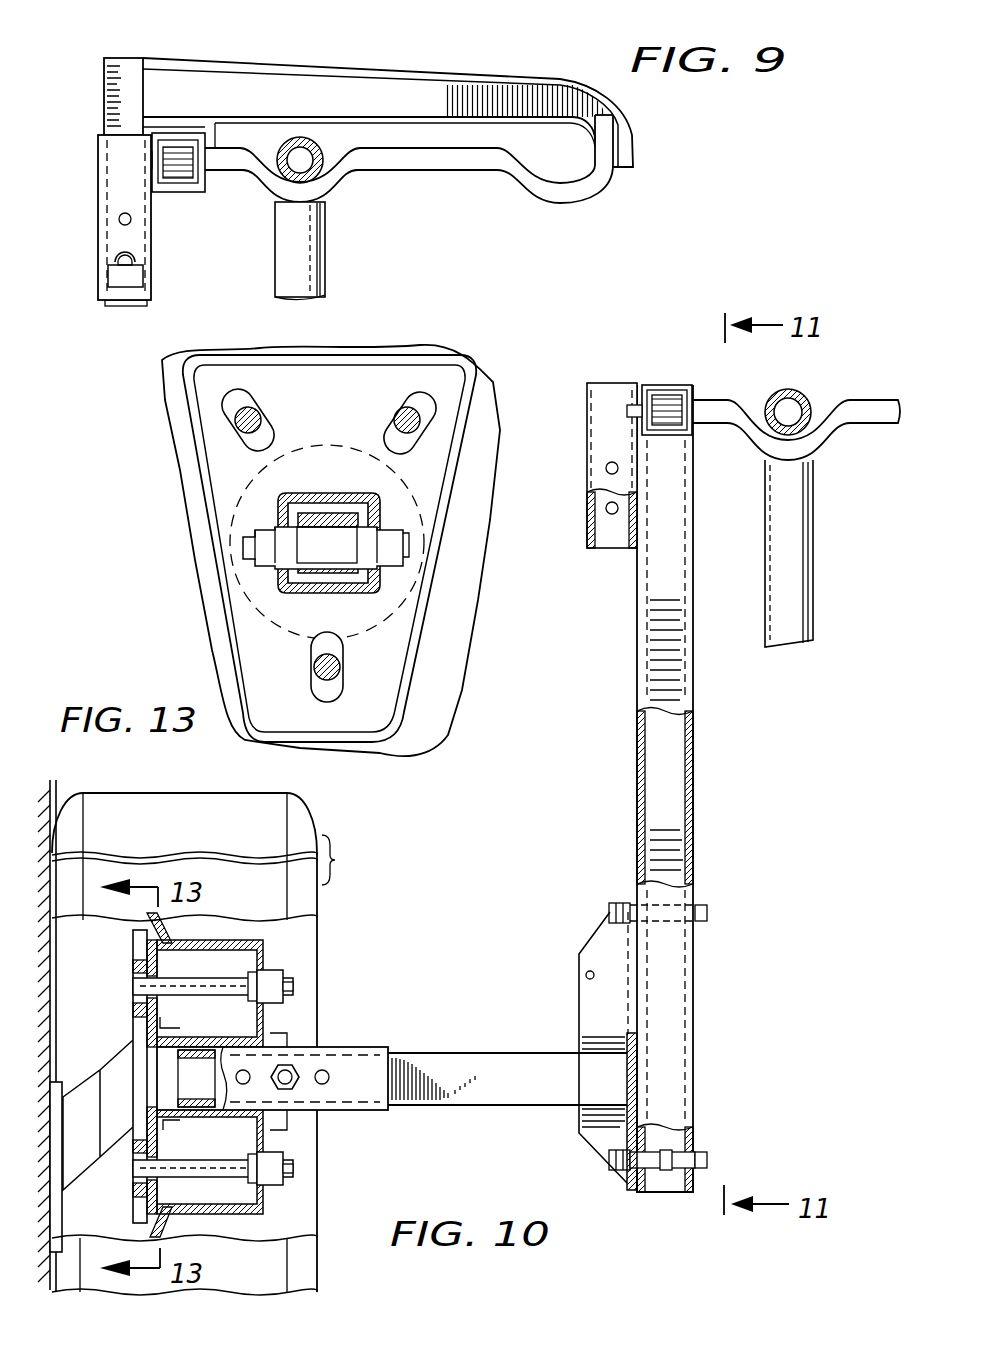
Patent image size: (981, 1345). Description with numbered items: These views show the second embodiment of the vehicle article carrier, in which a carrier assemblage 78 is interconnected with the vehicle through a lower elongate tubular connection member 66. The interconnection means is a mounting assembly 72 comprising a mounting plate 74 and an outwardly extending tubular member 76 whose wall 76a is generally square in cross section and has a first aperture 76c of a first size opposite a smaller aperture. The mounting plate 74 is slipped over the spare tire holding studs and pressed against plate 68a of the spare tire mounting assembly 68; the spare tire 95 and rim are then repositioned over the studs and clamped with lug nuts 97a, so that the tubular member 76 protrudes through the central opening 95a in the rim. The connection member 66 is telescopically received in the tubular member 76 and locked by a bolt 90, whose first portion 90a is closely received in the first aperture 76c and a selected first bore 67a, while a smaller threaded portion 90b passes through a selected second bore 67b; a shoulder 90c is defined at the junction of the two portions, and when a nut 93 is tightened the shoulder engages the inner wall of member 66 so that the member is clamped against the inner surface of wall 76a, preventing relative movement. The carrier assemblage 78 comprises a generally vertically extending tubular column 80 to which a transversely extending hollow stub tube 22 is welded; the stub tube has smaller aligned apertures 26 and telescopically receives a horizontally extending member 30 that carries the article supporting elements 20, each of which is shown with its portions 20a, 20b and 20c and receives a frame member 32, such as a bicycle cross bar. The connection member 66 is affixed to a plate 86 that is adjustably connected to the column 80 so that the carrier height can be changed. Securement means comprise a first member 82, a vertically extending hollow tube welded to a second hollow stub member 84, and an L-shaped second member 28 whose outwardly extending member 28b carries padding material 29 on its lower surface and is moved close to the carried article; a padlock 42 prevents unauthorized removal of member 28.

In FIG. 9, the article supporting first element 20 is at (473, 160).
In FIG. 10, the article supporting first element 20 is at (865, 421).
In FIG. 9, the hook end of rod 20a is at (567, 203).
In FIG. 9, the threaded end of rod 20b is at (182, 146).
In FIG. 10, the threaded end of rod 20b is at (672, 412).
In FIG. 9, the tubular leg 20c is at (305, 203).
In FIG. 10, the tubular leg 20c is at (789, 553).
In FIG. 9, the hollow stub tube 22 is at (196, 188).
In FIG. 10, the hollow stub tube 22 is at (655, 393).
In FIG. 10, the second pair of apertures 26 is at (587, 527).
In FIG. 9, the second member of securement means 28 is at (121, 55).
In FIG. 9, the outwardly extending member 28b is at (355, 68).
In FIG. 9, the padding material 29 is at (417, 135).
In FIG. 10, the horizontally extending member 30 is at (688, 400).
In FIG. 9, the frame member 32 is at (320, 172).
In FIG. 10, the frame member 32 is at (783, 390).
In FIG. 9, the padlock 42 is at (136, 279).
In FIG. 13, the elongate tubular connection member 66 is at (341, 575).
In FIG. 10, the elongate tubular connection member 66 is at (498, 1053).
In FIG. 13, the first bore 67a is at (360, 562).
In FIG. 13, the second bore 67b is at (296, 560).
In FIG. 10, the spare tire mounting assembly 68 is at (128, 944).
In FIG. 10, the plate of the spare tire mounting assembly 68a is at (135, 1050).
In FIG. 10, the mounting assembly 72 is at (110, 1024).
In FIG. 13, the mounting plate 74 is at (395, 640).
In FIG. 10, the mounting plate 74 is at (148, 1077).
In FIG. 13, the tubular member 76 is at (310, 600).
In FIG. 10, the tubular member 76 is at (386, 1044).
In FIG. 10, the wall 76a is at (371, 1112).
In FIG. 13, the first aperture 76c is at (372, 508).
In FIG. 9, the carrier assemblage 78 is at (98, 250).
In FIG. 10, the carrier assemblage 78 is at (676, 380).
In FIG. 10, the tubular column 80 is at (693, 772).
In FIG. 9, the first member of securement means 82 is at (149, 256).
In FIG. 9, the second hollow stub member 84 is at (176, 186).
In FIG. 10, the plate 86 is at (620, 1125).
In FIG. 13, the bolt 90 is at (405, 560).
In FIG. 10, the bolt 90 is at (300, 1076).
In FIG. 13, the first portion of bolt 90a is at (345, 520).
In FIG. 13, the second threaded portion of bolt 90b is at (243, 543).
In FIG. 13, the shoulder 90c is at (283, 530).
In FIG. 13, the nut 93 is at (278, 540).
In FIG. 10, the nut 93 is at (291, 1086).
In FIG. 10, the spare tire 95 is at (320, 897).
In FIG. 10, the central opening in spare tire rim 95a is at (265, 1024).
In FIG. 10, the lug nuts 97a is at (285, 988).